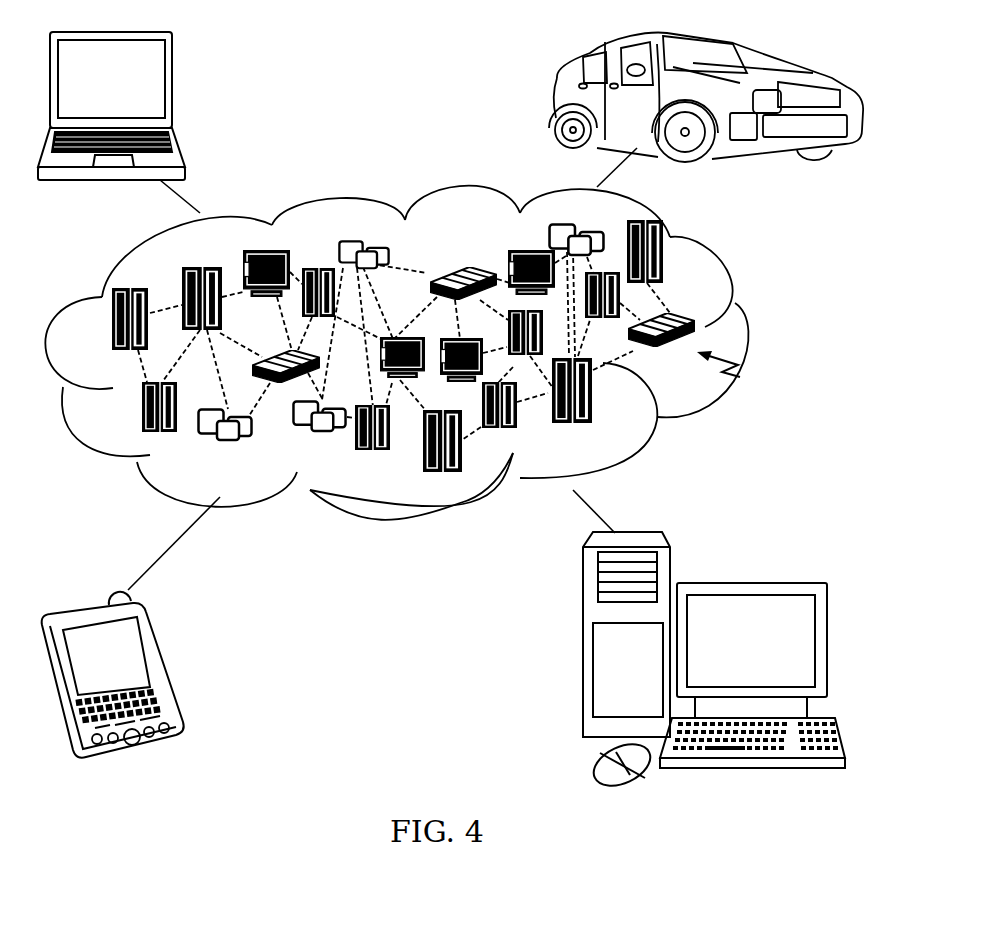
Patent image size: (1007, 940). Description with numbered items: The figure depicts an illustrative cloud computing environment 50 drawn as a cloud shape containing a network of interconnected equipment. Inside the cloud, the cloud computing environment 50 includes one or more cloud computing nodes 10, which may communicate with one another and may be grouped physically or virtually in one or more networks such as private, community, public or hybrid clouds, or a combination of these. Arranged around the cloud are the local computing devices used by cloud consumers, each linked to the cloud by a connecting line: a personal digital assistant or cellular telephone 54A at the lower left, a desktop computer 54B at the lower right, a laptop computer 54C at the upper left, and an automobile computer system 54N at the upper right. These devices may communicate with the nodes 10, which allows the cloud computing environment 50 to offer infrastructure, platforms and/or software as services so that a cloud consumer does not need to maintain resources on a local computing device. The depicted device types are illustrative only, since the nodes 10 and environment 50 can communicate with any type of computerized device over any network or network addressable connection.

The cloud computing node 10 is at (740, 377).
The cloud computing environment 50 is at (748, 327).
The personal digital assistant or cellular telephone 54A is at (162, 667).
The desktop computer 54B is at (748, 582).
The laptop computer 54C is at (173, 88).
The automobile computer system 54N is at (557, 103).